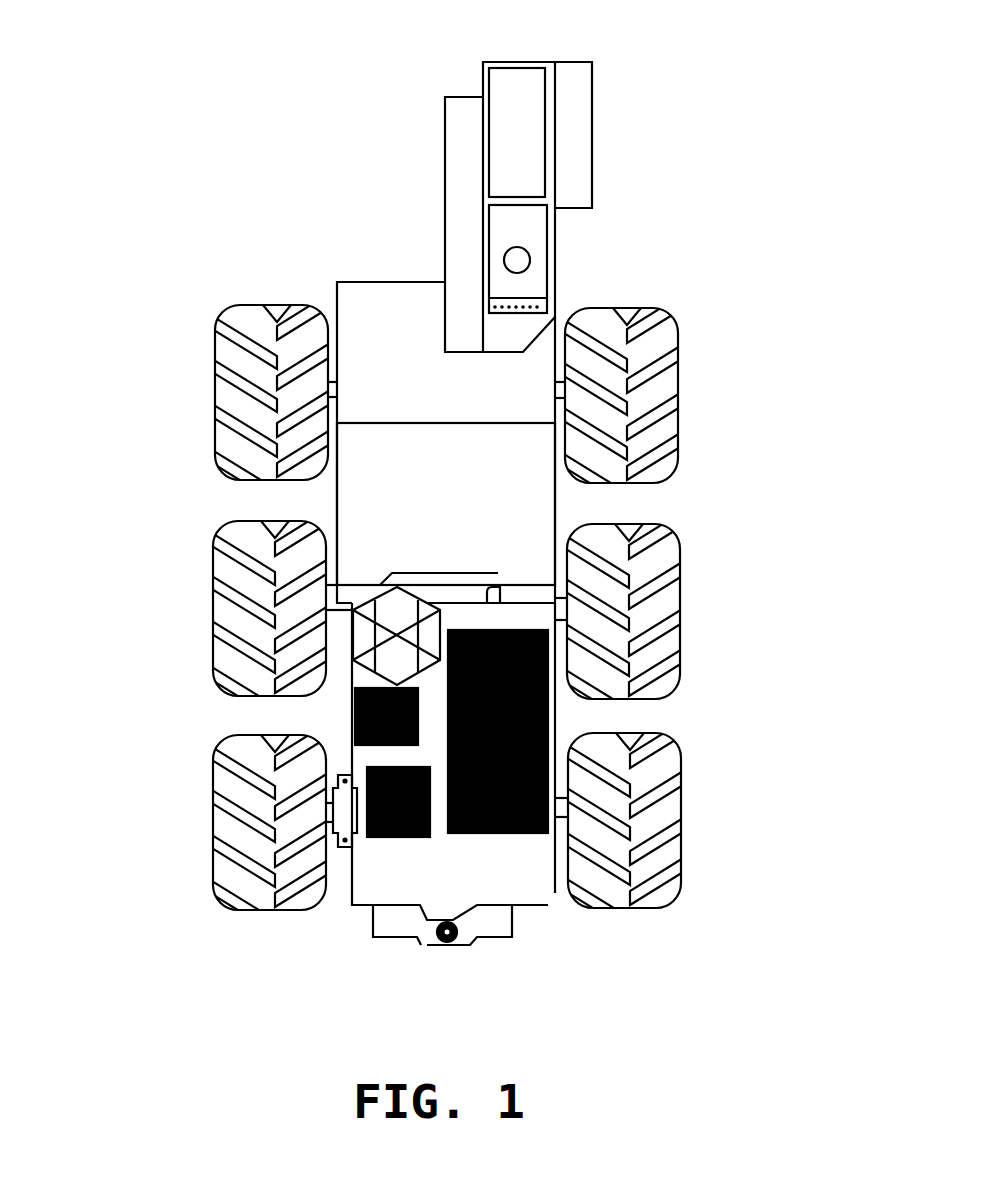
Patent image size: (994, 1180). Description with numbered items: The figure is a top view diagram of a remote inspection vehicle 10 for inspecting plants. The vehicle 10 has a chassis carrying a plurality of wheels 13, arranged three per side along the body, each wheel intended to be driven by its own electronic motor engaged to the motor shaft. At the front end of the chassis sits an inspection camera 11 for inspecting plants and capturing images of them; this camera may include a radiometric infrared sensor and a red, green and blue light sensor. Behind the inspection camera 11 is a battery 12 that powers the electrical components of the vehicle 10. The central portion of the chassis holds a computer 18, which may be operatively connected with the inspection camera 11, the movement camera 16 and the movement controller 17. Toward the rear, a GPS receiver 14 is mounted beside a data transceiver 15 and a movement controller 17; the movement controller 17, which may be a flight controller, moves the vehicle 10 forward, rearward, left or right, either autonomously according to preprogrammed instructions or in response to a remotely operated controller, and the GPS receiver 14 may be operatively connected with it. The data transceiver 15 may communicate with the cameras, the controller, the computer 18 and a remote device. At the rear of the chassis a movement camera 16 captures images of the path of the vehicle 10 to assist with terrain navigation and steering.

The remote inspection vehicle 10 is at (197, 97).
The inspection camera 11 is at (597, 108).
The battery 12 is at (392, 343).
The wheels 13 is at (217, 373).
The GPS receiver 14 is at (355, 668).
The data transceiver 15 is at (355, 718).
The movement camera 16 is at (482, 947).
The movement controller 17 is at (553, 720).
The computer 18 is at (470, 483).